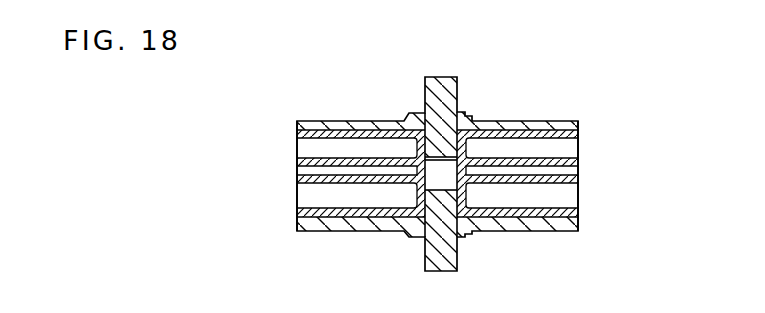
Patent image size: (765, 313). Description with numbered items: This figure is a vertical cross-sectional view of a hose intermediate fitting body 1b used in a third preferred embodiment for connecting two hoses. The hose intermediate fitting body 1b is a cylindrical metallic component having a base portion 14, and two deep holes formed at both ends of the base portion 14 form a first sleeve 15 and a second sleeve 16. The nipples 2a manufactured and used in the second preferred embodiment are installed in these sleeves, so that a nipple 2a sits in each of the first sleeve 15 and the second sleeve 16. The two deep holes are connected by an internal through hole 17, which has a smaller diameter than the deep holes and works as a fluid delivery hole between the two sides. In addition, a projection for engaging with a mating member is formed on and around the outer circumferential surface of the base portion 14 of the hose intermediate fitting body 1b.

The hose intermediate fitting body 1b is at (478, 105).
The base portion 14 is at (461, 74).
The first sleeve 15 is at (580, 148).
The second sleeve 16 is at (297, 147).
The nipple 2a is at (296, 188).
The internal through hole 17 is at (442, 175).